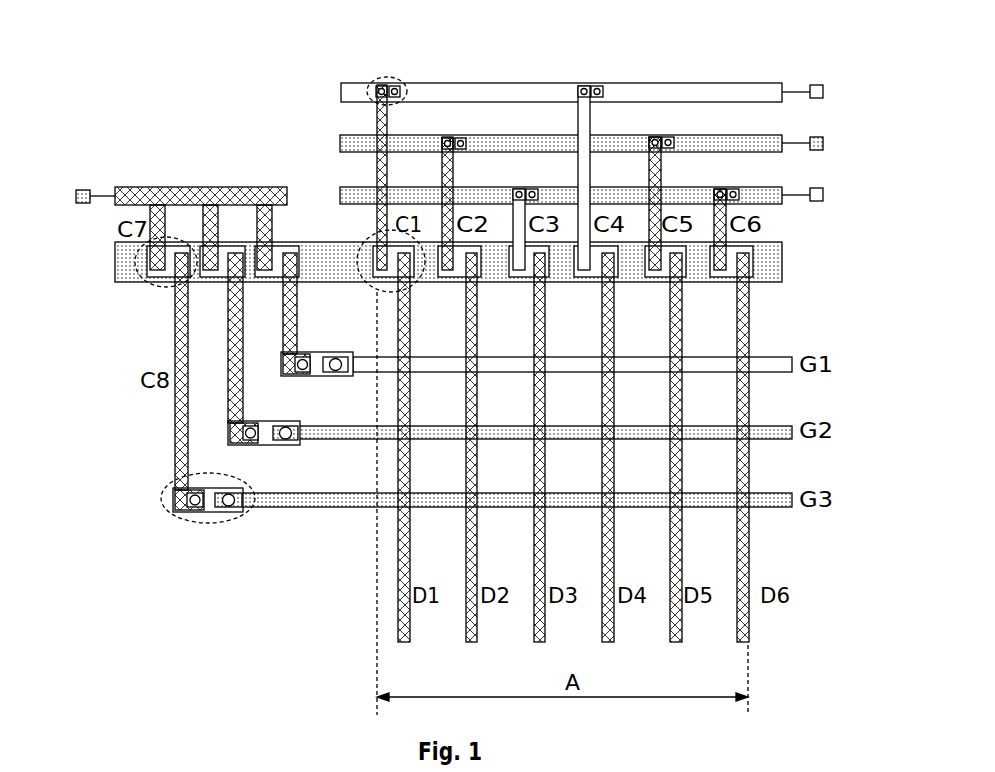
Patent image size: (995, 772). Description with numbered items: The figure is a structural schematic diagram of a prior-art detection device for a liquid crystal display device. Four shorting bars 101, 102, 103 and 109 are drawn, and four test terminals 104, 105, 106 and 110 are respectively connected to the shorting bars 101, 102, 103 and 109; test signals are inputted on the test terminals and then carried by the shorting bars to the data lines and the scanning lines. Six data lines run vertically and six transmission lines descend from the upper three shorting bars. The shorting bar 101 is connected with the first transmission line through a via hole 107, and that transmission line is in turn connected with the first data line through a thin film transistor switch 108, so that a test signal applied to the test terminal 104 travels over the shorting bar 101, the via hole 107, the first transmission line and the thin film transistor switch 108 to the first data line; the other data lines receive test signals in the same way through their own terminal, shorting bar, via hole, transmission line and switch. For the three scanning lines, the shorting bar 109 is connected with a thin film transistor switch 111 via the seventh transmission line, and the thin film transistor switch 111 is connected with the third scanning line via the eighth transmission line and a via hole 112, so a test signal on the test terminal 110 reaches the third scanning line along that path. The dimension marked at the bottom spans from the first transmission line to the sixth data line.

The shorting bar 101 is at (543, 93).
The shorting bar 102 is at (543, 144).
The shorting bar 103 is at (543, 195).
The test terminal 104 is at (826, 93).
The test terminal 105 is at (826, 144).
The test terminal 106 is at (826, 195).
The via hole 107 is at (387, 75).
The thin film transistor switch 108 is at (387, 228).
The shorting bar 109 is at (201, 212).
The test terminal 110 is at (71, 197).
The thin film transistor switch 111 is at (135, 285).
The via hole 112 is at (190, 525).